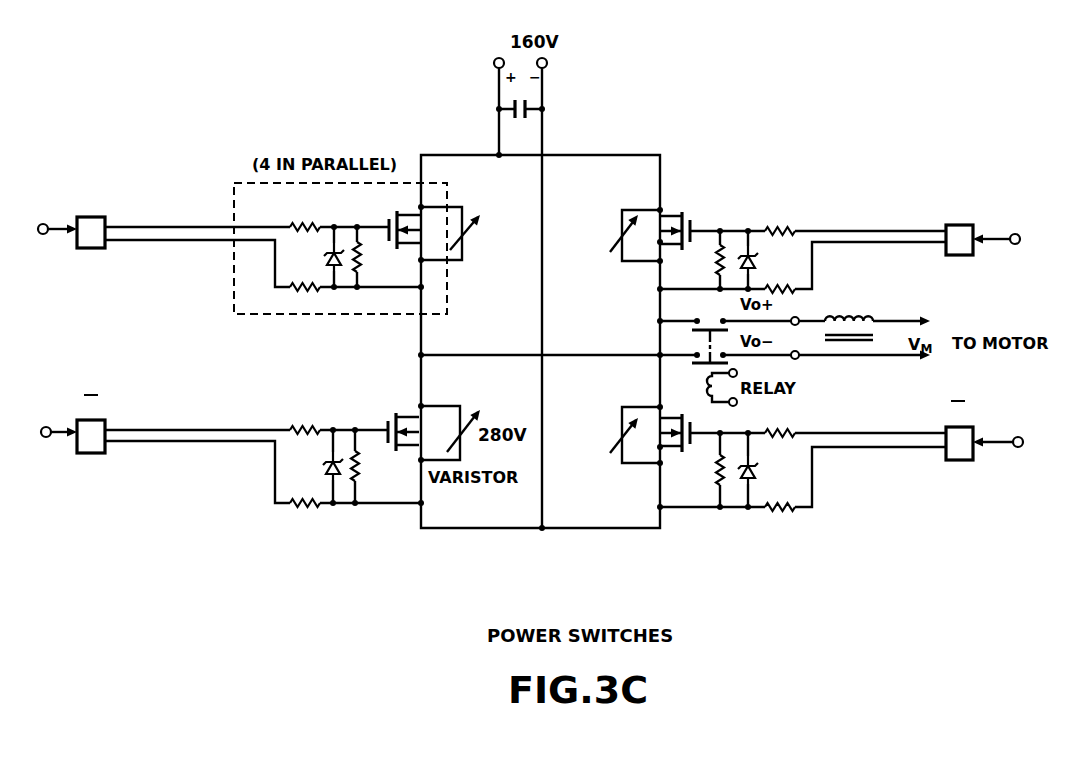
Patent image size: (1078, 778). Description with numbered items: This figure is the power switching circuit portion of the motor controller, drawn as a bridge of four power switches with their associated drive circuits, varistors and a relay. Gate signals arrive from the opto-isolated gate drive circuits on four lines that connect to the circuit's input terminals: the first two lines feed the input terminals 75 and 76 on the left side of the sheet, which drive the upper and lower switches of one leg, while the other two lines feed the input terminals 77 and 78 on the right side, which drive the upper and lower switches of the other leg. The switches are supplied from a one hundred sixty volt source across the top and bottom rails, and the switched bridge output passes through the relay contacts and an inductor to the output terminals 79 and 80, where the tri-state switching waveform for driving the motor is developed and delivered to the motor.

The input terminal 75 is at (106, 223).
The input terminal 76 is at (106, 425).
The input terminal 77 is at (972, 224).
The input terminal 78 is at (972, 428).
The output terminal 79 is at (913, 321).
The output terminal 80 is at (918, 357).